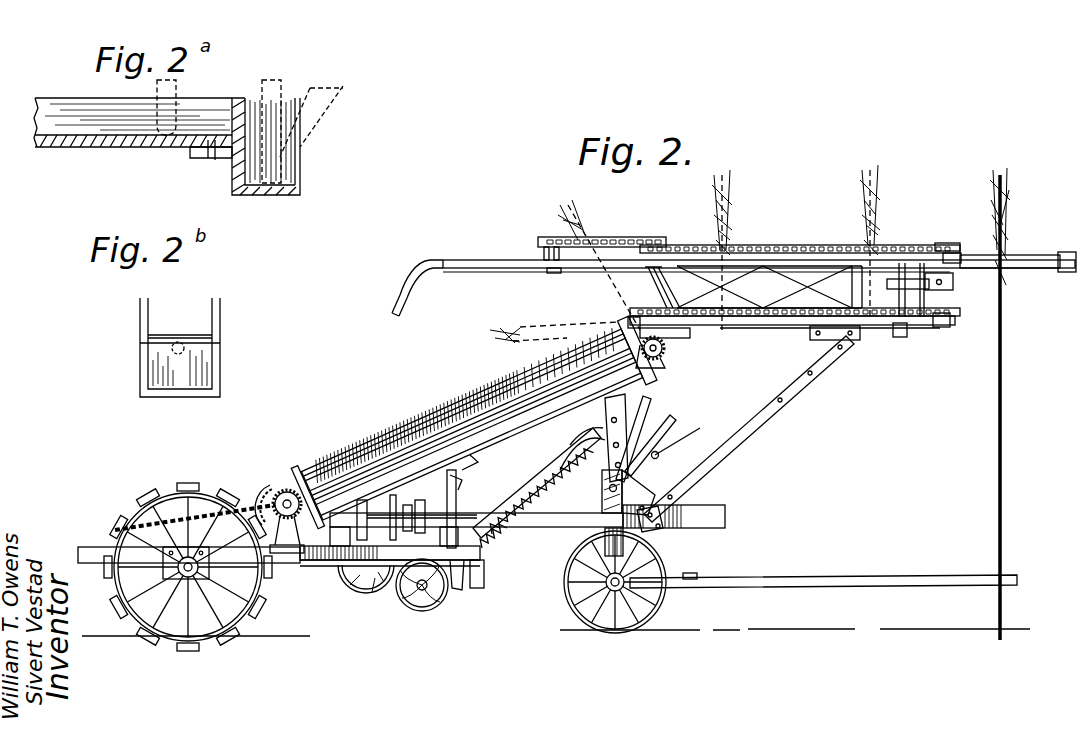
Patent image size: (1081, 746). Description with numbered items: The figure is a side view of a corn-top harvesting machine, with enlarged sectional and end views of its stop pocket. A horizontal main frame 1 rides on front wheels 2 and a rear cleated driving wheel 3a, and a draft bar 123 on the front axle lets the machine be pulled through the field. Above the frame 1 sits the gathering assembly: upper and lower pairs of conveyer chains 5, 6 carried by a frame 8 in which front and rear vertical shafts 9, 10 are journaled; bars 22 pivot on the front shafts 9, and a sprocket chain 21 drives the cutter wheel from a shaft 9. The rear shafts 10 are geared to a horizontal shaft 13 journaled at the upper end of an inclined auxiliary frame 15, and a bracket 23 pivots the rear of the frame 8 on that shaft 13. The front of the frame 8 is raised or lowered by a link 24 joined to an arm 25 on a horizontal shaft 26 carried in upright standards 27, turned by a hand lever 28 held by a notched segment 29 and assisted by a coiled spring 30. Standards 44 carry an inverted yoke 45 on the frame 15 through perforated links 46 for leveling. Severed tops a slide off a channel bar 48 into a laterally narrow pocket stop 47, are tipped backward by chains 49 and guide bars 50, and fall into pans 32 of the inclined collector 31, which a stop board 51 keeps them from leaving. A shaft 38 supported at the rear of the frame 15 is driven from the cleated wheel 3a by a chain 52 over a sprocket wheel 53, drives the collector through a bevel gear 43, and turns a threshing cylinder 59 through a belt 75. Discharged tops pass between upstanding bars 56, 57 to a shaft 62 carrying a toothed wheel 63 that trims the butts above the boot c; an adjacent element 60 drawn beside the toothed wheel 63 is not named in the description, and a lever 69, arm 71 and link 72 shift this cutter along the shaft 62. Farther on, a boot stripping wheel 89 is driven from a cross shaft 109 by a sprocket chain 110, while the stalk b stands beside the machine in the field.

In FIG. 2, the main frame 1 is at (97, 562).
In FIG. 2, the front wheel 2 is at (564, 598).
In FIG. 2, the cleated driving wheel 3a is at (140, 508).
In FIG. 2, the upper conveyer chain 5 is at (783, 247).
In FIG. 2, the lower conveyer chain 6 is at (770, 308).
In FIG. 2, the frame 8 is at (817, 273).
In FIG. 2, the front vertical shaft 9 is at (942, 247).
In FIG. 2, the rear vertical shaft 10 is at (655, 283).
In FIG. 2, the horizontal shaft 13 is at (658, 360).
In FIG. 2, the auxiliary frame 15 is at (475, 462).
In FIG. 2, the sprocket chain 21 is at (933, 284).
In FIG. 2, the bar 22 is at (1020, 244).
In FIG. 2, the bracket 23 is at (690, 333).
In FIG. 2, the link 24 is at (773, 418).
In FIG. 2, the arm 25 is at (660, 532).
In FIG. 2, the horizontal shaft 26 is at (609, 490).
In FIG. 2, the upright standard 27 is at (583, 510).
In FIG. 2, the hand lever 28 is at (650, 398).
In FIG. 2, the notched segment 29 is at (659, 454).
In FIG. 2, the coiled spring 30 is at (496, 543).
In FIG. 2, the collector 31 is at (448, 410).
In FIG. 2, the pan 32 is at (507, 388).
In FIG. 2, the horizontal shaft 38 is at (286, 491).
In FIG. 2, the bevel gear 43 is at (667, 350).
In FIG. 2, the upright standard 44 is at (609, 440).
In FIG. 2, the inverted yoke 45 is at (650, 390).
In FIG. 2, the link 46 is at (645, 430).
In FIG. 2A, the stop 47 is at (292, 150).
In FIG. 2B, the stop 47 is at (198, 362).
In FIG. 2, the stop 47 is at (630, 320).
In FIG. 2A, the channel bar 48 is at (72, 112).
In FIG. 2B, the channel bar 48 is at (185, 340).
In FIG. 2, the chain 49 is at (637, 222).
In FIG. 2, the guide bar 50 is at (498, 259).
In FIG. 2, the stop board 51 is at (300, 452).
In FIG. 2, the chain 52 is at (253, 512).
In FIG. 2, the sprocket wheel 53 is at (182, 600).
In FIG. 2, the upstanding bar 56 is at (457, 496).
In FIG. 2, the upstanding bar 57 is at (458, 480).
In FIG. 2, the threshing cylinder 59 is at (367, 590).
In FIG. 2, the roller 60 is at (407, 506).
In FIG. 2, the shaft 62 is at (403, 512).
In FIG. 2, the toothed wheel 63 is at (426, 512).
In FIG. 2, the lever 69 is at (688, 448).
In FIG. 2, the arm 71 is at (620, 478).
In FIG. 2, the link 72 is at (580, 492).
In FIG. 2, the belt 75 is at (268, 500).
In FIG. 2, the boot stripping wheel 89 is at (433, 600).
In FIG. 2, the cross shaft 109 is at (468, 588).
In FIG. 2, the sprocket chain 110 is at (483, 580).
In FIG. 2, the draft bar 123 is at (847, 577).
In FIG. 2A, the tops a is at (178, 88).
In FIG. 2, the tops a is at (523, 330).
In FIG. 2, the plant stalk b is at (1008, 317).
In FIG. 2, the boot c is at (580, 235).